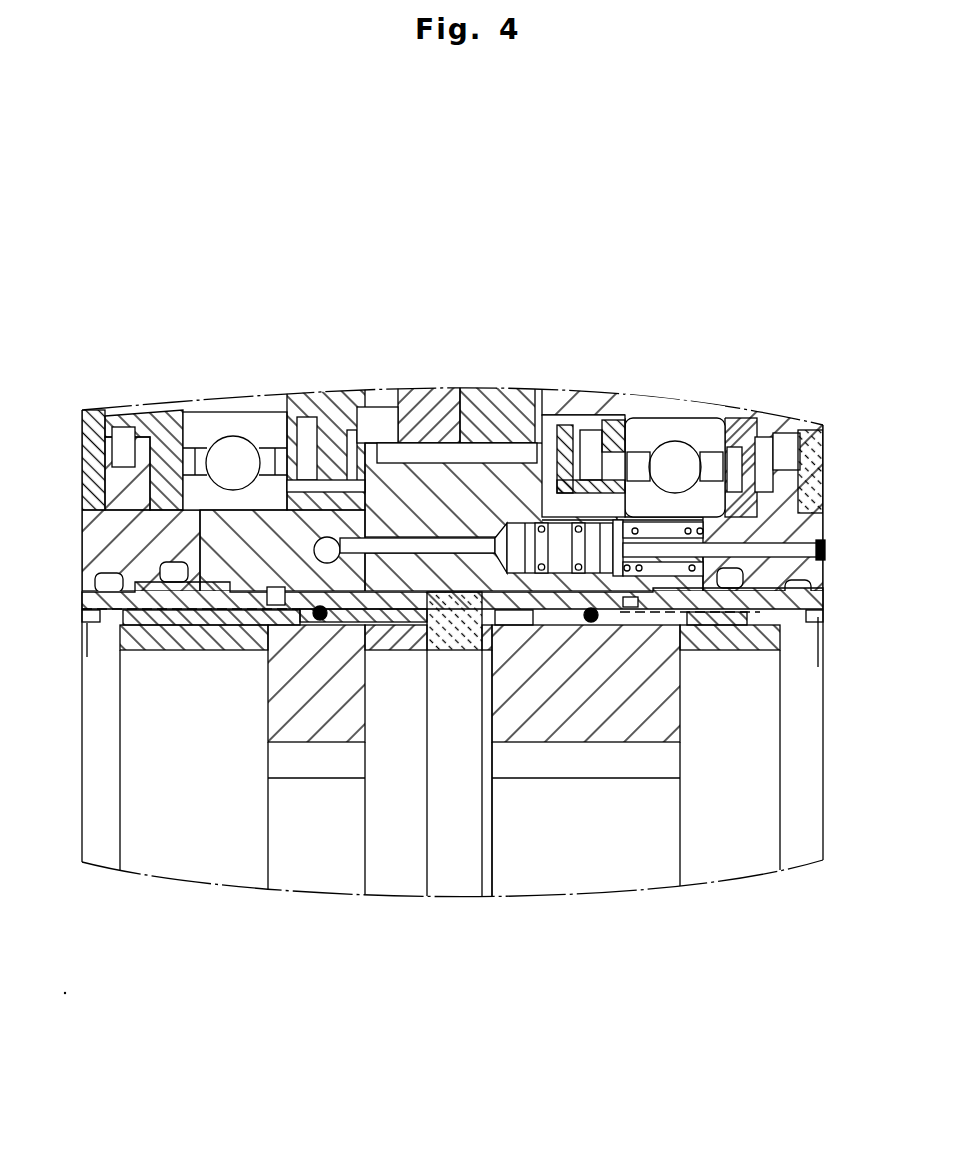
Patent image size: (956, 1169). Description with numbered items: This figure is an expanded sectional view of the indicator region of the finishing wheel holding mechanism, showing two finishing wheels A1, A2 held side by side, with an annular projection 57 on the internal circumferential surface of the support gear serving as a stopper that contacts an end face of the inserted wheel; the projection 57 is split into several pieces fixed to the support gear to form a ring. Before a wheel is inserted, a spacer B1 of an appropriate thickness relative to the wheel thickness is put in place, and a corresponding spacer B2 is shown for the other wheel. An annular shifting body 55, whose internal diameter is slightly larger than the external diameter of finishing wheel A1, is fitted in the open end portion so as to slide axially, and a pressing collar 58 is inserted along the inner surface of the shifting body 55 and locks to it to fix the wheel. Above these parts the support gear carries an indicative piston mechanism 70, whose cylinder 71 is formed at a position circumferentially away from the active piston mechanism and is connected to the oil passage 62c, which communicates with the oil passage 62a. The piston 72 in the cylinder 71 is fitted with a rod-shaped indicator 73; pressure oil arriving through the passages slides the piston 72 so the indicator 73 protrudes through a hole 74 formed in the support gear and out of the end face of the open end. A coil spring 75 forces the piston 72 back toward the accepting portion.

The oil passage 62a is at (327, 537).
The oil passage 62c is at (398, 480).
The cylinder 71 is at (517, 520).
The piston 72 is at (560, 522).
The indicative piston mechanism 70 is at (643, 498).
The coil spring 75 is at (668, 521).
The hole 74 is at (724, 540).
The indicator 73 is at (823, 545).
The shifting body 55 is at (82, 600).
The pressing collar 58 is at (197, 650).
The chamber B2 is at (395, 650).
The spacer B1 is at (482, 650).
The finishing wheel A2 is at (298, 866).
The finishing wheel A1 is at (565, 884).
The annular projection 57 is at (455, 650).